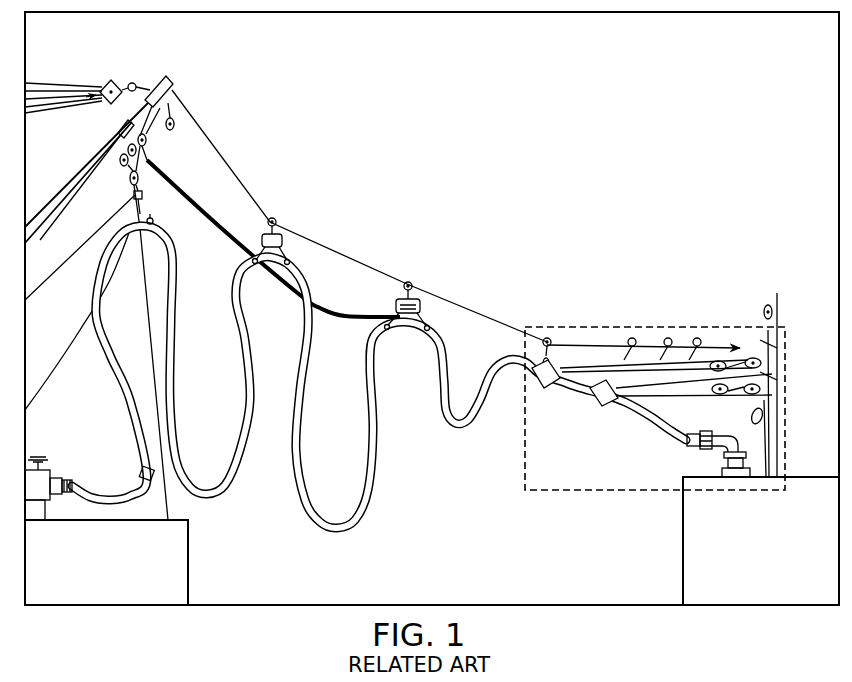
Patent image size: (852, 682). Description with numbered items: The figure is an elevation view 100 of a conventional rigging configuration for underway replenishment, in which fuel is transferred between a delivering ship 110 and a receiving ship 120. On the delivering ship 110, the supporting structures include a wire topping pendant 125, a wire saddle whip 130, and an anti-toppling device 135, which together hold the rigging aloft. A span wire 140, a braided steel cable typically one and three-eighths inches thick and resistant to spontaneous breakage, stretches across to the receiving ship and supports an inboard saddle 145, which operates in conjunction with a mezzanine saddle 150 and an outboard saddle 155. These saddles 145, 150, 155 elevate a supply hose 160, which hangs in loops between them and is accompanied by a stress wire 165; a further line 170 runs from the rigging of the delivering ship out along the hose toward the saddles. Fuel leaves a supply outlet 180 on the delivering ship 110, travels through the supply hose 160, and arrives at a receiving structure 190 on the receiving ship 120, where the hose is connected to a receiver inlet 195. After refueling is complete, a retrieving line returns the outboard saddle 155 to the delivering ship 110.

The elevation view 100 is at (682, 116).
The delivering ship 110 is at (106, 562).
The receiving ship 120 is at (761, 541).
The wire topping pendant 125 is at (174, 492).
The wire saddle whip 130 is at (74, 218).
The anti-toppling device 135 is at (150, 162).
The span wire 140 is at (436, 292).
The inboard saddle 145 is at (156, 218).
The mezzanine saddle 150 is at (288, 242).
The outboard saddle 155 is at (426, 307).
The supply hose 160 is at (388, 478).
The stress wire 165 is at (512, 356).
The inhaul line 170 is at (330, 303).
The supply outlet 180 is at (64, 470).
The receiving structure 190 is at (568, 495).
The receiver inlet 195 is at (716, 468).